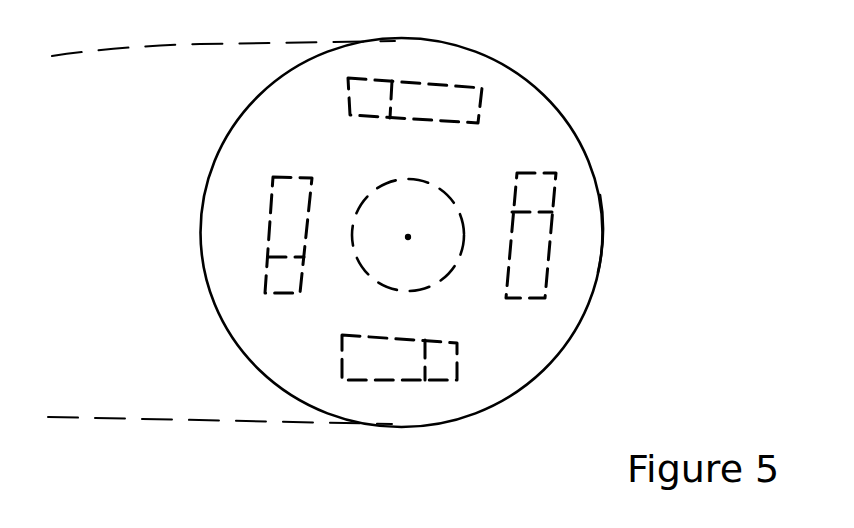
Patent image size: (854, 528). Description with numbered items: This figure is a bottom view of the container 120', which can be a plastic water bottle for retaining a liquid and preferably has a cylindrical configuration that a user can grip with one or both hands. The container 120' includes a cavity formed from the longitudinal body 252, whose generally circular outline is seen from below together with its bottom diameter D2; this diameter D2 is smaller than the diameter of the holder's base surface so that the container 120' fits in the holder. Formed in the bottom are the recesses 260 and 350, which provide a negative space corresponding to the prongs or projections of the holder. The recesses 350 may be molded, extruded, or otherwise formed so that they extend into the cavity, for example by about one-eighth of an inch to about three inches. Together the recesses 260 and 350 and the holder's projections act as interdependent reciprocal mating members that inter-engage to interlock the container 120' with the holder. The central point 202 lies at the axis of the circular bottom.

The container 120' is at (447, 219).
The longitudinal body 252 is at (603, 244).
The recess 260 is at (417, 269).
The center axis point 202 is at (413, 227).
The recesses 350 is at (508, 108).
The diameter of the bottom of the container D2 is at (47, 405).